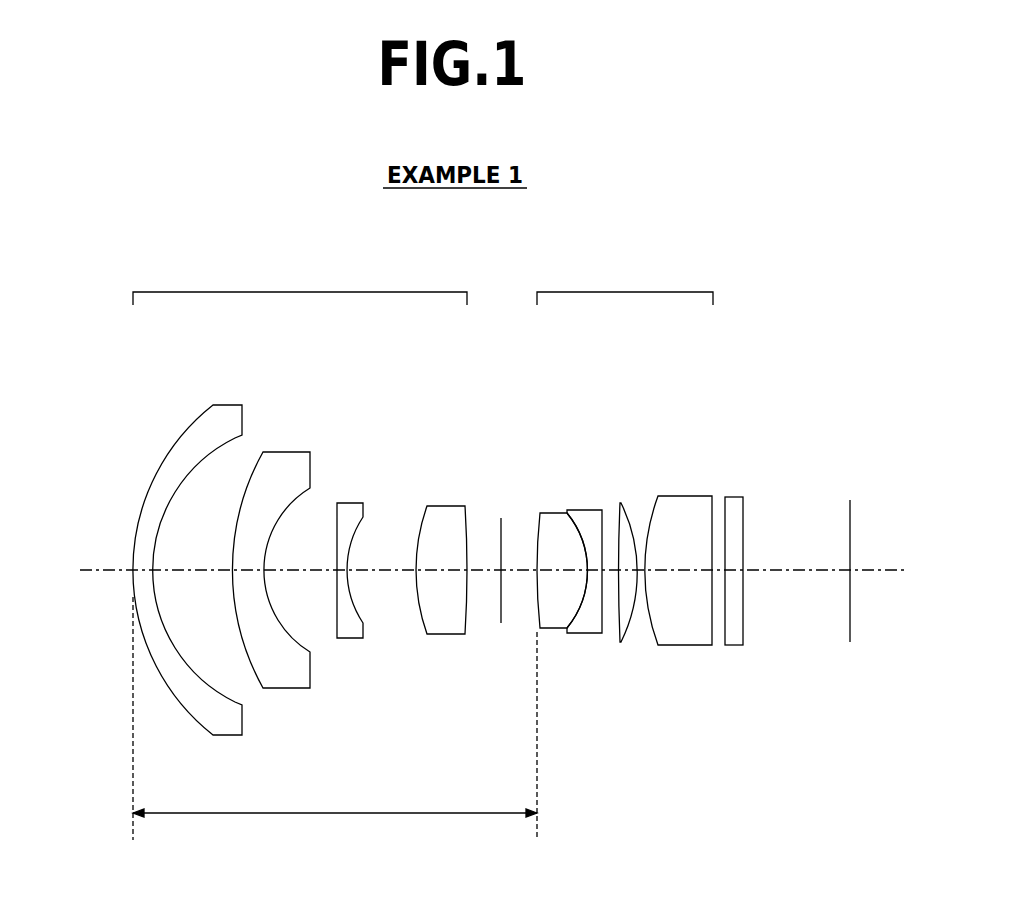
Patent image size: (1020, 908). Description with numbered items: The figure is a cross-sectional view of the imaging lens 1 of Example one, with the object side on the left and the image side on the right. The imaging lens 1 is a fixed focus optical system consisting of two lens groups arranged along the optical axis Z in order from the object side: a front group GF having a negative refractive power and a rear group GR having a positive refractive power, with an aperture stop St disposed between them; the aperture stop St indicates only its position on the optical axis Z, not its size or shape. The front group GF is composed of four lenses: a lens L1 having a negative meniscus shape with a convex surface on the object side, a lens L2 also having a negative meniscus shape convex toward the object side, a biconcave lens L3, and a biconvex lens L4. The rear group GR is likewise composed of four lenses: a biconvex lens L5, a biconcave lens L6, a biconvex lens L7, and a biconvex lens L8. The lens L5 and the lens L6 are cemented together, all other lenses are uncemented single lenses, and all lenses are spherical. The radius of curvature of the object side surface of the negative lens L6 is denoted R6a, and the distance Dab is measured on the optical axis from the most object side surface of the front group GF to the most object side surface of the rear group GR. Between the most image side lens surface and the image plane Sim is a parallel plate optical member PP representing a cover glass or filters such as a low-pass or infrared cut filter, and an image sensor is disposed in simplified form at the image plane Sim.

The imaging lens 1 is at (697, 243).
The optical axis Z is at (98, 569).
The front group GF is at (300, 500).
The rear group GR is at (625, 494).
The lens L1 is at (227, 407).
The lens L2 is at (285, 452).
The lens L3 is at (351, 505).
The lens L4 is at (443, 507).
The lens L5 is at (550, 515).
The lens L6 is at (587, 512).
The lens L7 is at (622, 516).
The lens L8 is at (683, 505).
The radius of curvature of the object side surface of the negative lens in the rear R6a is at (575, 612).
The aperture stop St is at (501, 520).
The parallel plate optical member PP is at (728, 497).
The image plane Sim is at (850, 518).
The distance on the optical axis between the most object side lens surface in the fr Dab is at (335, 718).